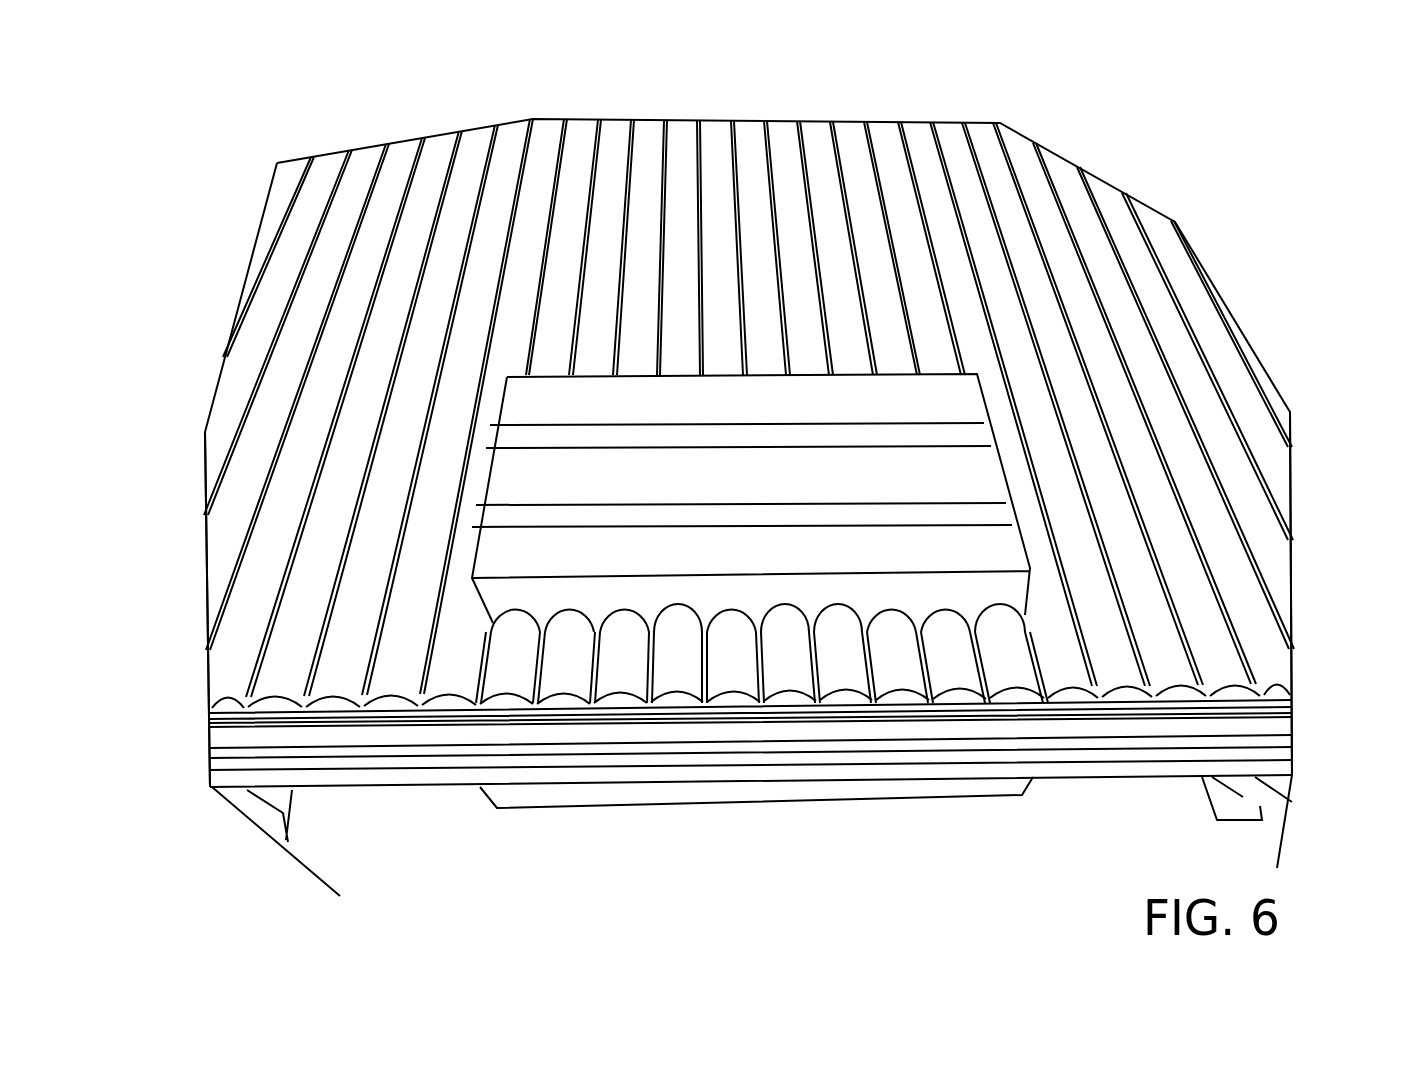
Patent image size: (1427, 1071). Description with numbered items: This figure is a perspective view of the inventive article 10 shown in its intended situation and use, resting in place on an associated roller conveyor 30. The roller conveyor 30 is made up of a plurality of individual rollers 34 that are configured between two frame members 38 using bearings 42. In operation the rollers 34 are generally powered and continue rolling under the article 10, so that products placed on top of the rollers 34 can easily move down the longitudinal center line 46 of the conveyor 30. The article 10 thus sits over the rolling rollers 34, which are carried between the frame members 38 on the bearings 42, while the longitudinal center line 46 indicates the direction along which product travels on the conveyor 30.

The article 10 is at (1032, 563).
The roller conveyor 30 is at (938, 193).
The rollers 34 is at (653, 126).
The frame members 38 is at (1285, 722).
The bearings 42 is at (265, 706).
The longitudinal center line 46 is at (205, 434).